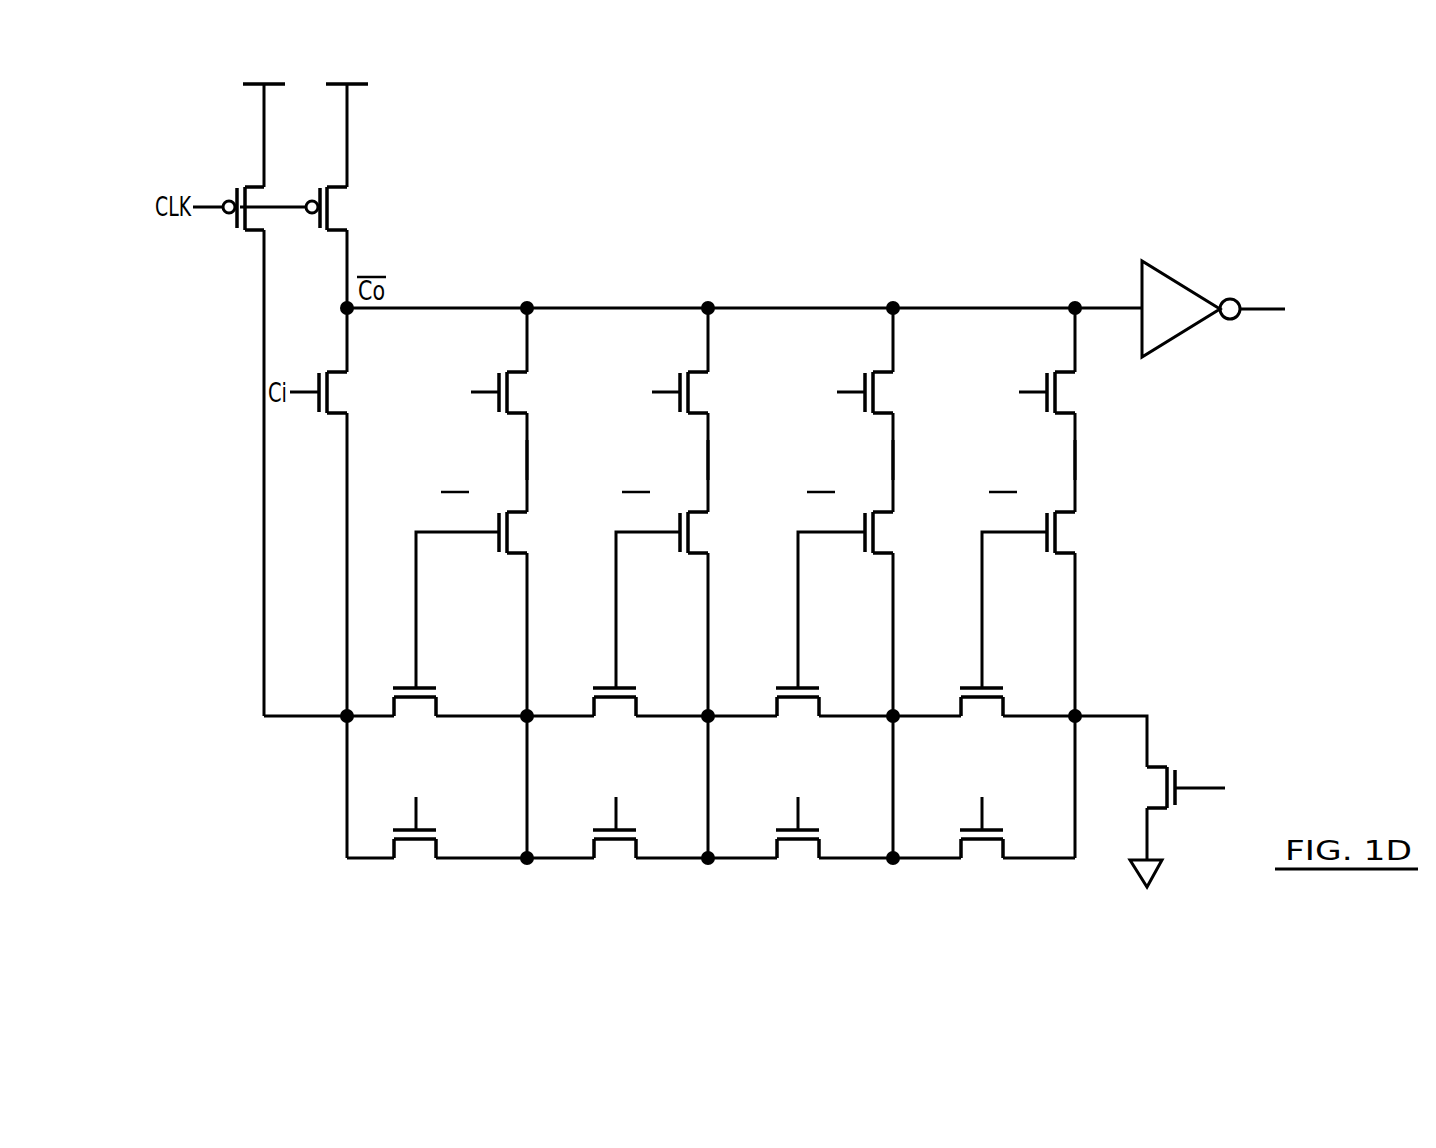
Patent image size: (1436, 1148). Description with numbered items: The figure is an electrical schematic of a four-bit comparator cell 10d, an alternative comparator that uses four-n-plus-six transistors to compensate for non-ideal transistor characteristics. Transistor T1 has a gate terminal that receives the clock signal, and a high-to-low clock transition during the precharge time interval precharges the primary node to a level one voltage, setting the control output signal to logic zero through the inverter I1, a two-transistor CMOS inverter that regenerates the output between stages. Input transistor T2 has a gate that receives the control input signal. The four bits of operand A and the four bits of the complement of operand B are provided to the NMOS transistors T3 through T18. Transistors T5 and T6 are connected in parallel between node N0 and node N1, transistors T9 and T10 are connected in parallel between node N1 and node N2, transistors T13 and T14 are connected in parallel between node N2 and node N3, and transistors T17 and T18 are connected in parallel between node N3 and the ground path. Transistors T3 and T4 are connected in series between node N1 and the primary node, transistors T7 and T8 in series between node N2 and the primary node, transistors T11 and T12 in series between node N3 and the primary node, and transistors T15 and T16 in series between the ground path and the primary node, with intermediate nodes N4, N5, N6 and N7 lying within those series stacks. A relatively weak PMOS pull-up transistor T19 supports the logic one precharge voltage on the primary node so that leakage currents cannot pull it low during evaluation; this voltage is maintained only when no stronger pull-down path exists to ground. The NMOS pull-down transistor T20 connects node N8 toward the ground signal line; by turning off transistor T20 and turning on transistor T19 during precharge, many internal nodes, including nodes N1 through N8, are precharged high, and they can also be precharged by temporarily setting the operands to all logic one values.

The 4-bit comparator 10d is at (1011, 224).
The transistor T1 is at (331, 208).
The input transistor T2 is at (338, 392).
The NMOS transistor T3 is at (490, 392).
The NMOS transistor T4 is at (478, 590).
The NMOS transistor T5 is at (414, 718).
The NMOS transistor T6 is at (414, 827).
The NMOS transistor T7 is at (671, 392).
The NMOS transistor T8 is at (668, 590).
The NMOS transistor T9 is at (614, 718).
The NMOS transistor T10 is at (614, 827).
The NMOS transistor T11 is at (861, 392).
The NMOS transistor T12 is at (856, 590).
The NMOS transistor T13 is at (797, 718).
The NMOS transistor T14 is at (797, 827).
The NMOS transistor T15 is at (1043, 392).
The NMOS transistor T16 is at (1040, 590).
The NMOS transistor T17 is at (981, 718).
The NMOS transistor T18 is at (981, 827).
The PMOS pull-up transistor T19 is at (264, 202).
The NMOS pull-down transistor T20 is at (1188, 827).
The inverter I1 is at (1227, 309).
The node N0 is at (334, 703).
The node N1 is at (516, 703).
The node N2 is at (695, 703).
The node N3 is at (880, 703).
The node N4 is at (542, 460).
The node N5 is at (723, 460).
The node N6 is at (908, 460).
The node N7 is at (1090, 460).
The node N8 is at (1088, 703).